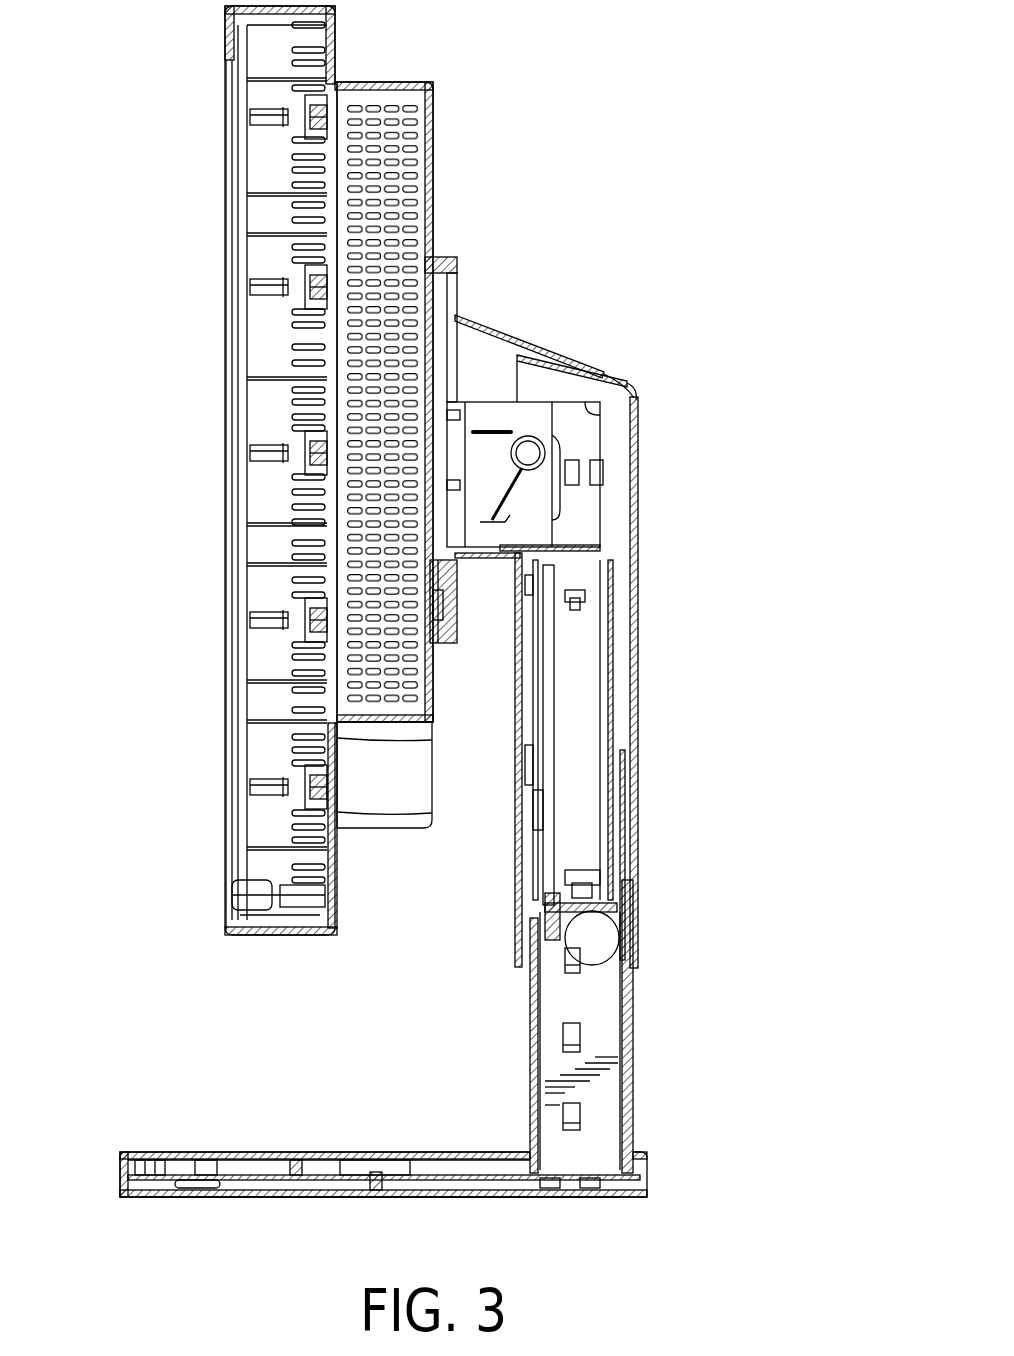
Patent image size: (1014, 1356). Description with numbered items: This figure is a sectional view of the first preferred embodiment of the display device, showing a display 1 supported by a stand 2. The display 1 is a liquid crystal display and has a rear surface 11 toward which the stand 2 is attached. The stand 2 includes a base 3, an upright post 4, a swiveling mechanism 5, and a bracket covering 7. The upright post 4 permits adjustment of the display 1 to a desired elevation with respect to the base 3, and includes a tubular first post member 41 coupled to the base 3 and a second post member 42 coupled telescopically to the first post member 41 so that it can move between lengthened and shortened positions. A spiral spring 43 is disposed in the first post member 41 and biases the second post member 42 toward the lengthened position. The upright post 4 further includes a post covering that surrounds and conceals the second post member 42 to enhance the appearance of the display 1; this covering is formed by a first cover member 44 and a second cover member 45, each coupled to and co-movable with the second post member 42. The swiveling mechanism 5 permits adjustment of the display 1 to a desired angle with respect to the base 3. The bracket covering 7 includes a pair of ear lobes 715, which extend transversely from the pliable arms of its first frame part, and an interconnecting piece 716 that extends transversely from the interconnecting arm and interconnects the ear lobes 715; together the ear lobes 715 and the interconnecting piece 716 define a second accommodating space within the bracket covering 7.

The display 1 is at (332, 470).
The rear surface 11 is at (433, 157).
The stand 2 is at (595, 690).
The base 3 is at (152, 1137).
The upright post 4 is at (596, 863).
The first post member 41 is at (563, 1000).
The second post member 42 is at (586, 760).
The spiral spring 43 is at (618, 978).
The first cover member 44 is at (515, 858).
The second cover member 45 is at (635, 715).
The swiveling mechanism 5 is at (541, 391).
The bracket covering 7 is at (561, 425).
The ear lobes 715 is at (480, 350).
The interconnecting piece 716 is at (530, 338).